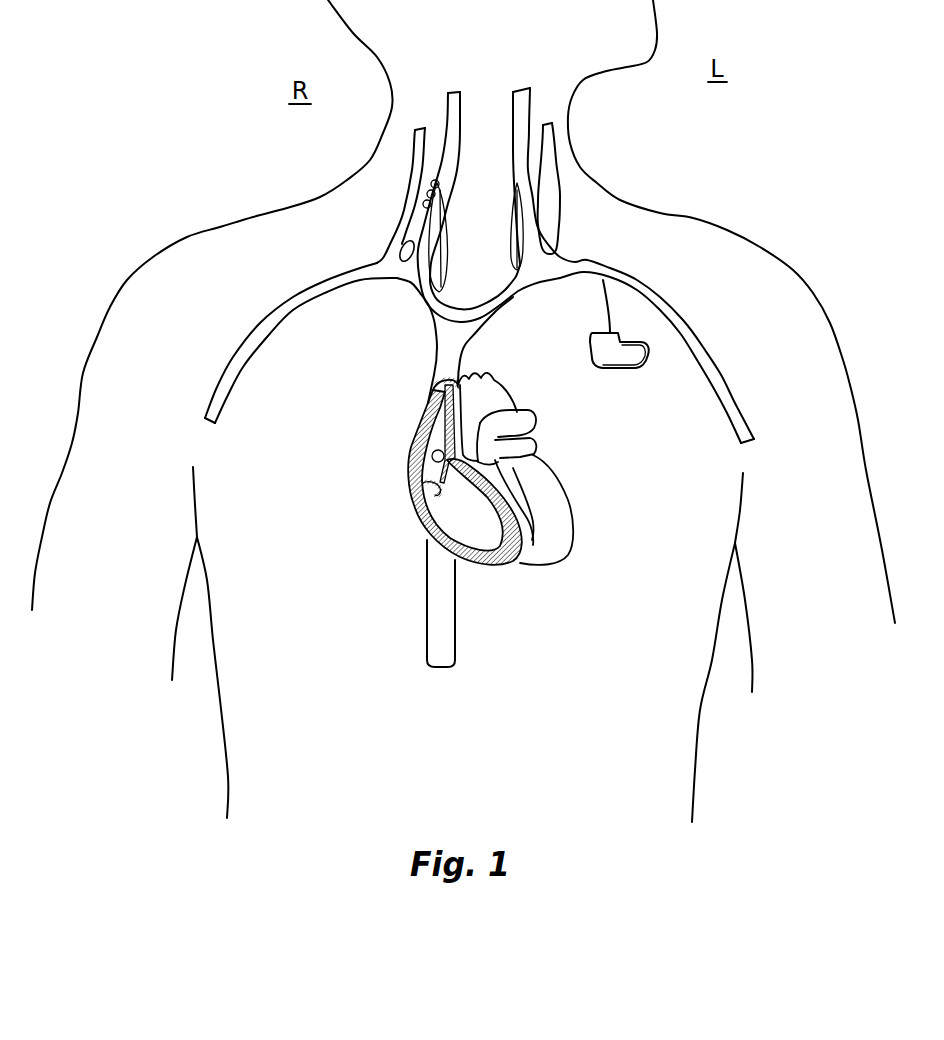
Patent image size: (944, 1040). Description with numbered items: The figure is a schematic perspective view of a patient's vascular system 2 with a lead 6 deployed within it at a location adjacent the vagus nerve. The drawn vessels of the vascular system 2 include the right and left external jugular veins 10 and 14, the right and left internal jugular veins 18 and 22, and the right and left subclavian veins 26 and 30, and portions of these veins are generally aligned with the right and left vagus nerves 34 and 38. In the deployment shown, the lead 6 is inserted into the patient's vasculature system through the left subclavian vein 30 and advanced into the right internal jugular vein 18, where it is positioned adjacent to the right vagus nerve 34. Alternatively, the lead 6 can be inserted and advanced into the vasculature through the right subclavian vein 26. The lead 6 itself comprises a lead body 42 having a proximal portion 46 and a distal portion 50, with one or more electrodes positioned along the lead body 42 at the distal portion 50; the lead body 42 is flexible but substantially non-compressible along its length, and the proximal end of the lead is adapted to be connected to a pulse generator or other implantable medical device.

The vascular system 2 is at (483, 43).
The lead 6 is at (487, 317).
The right external jugular vein 10 is at (412, 175).
The left external jugular vein 14 is at (560, 197).
The right internal jugular vein 18 is at (453, 110).
The left internal jugular vein 22 is at (520, 115).
The right subclavian vein 26 is at (312, 293).
The left subclavian vein 30 is at (623, 280).
The right vagus nerve 34 is at (443, 212).
The left vagus nerve 38 is at (512, 233).
The lead body 42 is at (533, 283).
The proximal portion 46 is at (582, 262).
The distal portion 50 is at (405, 260).